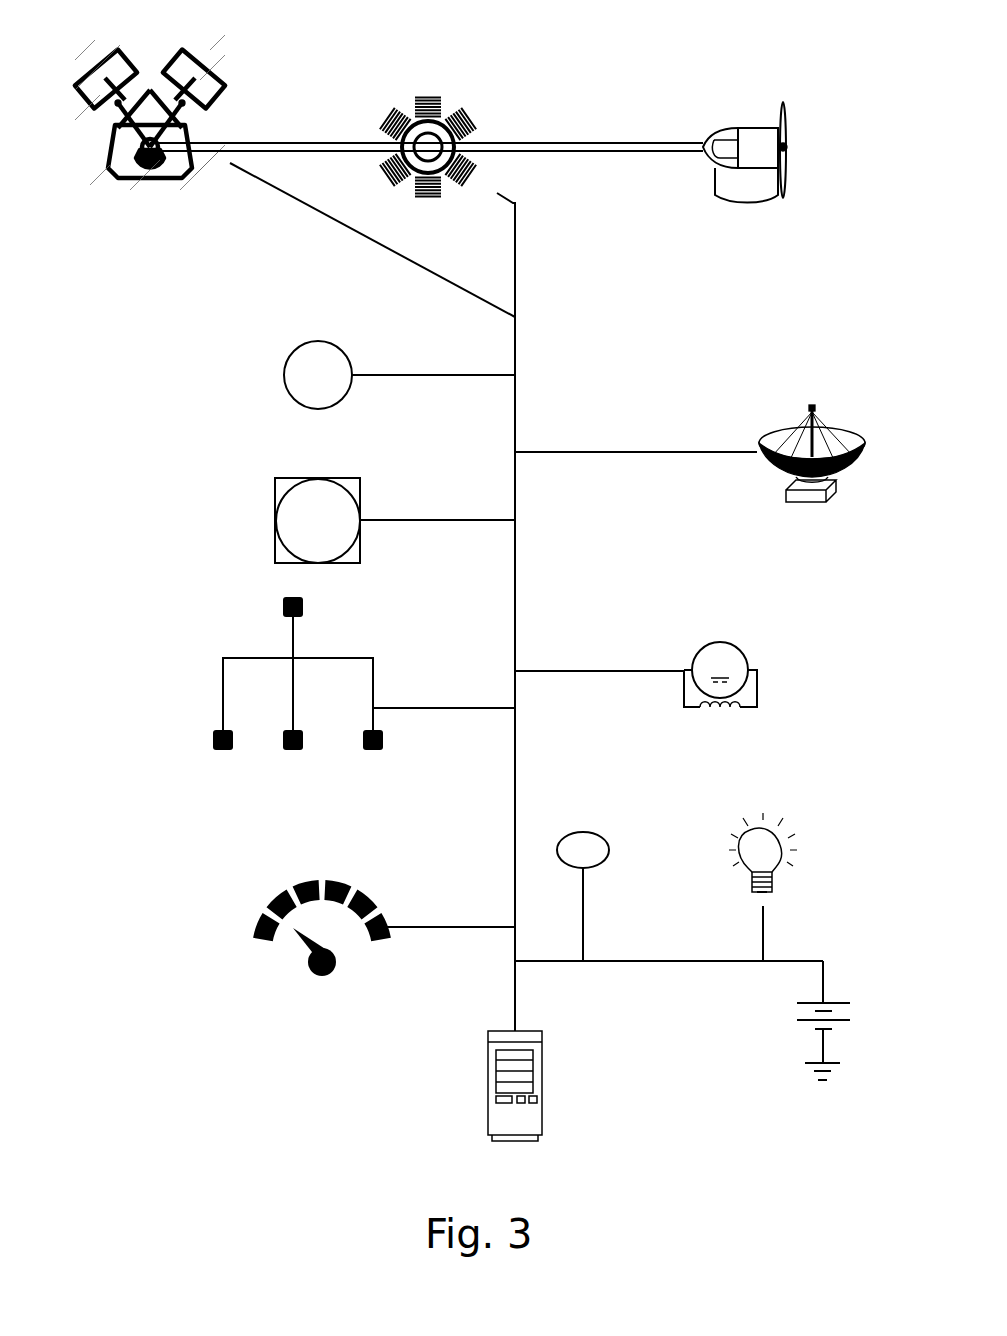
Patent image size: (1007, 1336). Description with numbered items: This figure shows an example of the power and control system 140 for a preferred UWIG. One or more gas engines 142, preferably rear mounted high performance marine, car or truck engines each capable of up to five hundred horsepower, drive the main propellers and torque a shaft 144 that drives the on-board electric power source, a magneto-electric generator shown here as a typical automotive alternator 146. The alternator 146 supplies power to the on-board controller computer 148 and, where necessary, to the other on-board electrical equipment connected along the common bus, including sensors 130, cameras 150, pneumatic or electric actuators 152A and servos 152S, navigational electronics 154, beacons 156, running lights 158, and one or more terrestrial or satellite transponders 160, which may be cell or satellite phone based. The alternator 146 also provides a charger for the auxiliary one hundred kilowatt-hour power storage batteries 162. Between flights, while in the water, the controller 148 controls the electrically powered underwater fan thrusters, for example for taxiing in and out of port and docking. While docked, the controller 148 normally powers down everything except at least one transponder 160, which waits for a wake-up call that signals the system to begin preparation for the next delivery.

The sensors 130 is at (285, 368).
The power and control system 140 is at (830, 1112).
The gas engine 142 is at (72, 80).
The shaft 144 is at (633, 143).
The alternator 146 is at (498, 123).
The controller computer 148 is at (545, 1090).
The cameras 150 is at (275, 500).
The actuators 152A is at (238, 658).
The servos 152S is at (740, 650).
The navigational electronics 154 is at (258, 918).
The beacons 156 is at (800, 820).
The running lights 158 is at (612, 850).
The transponder 160 is at (838, 405).
The power storage batteries 162 is at (840, 1003).